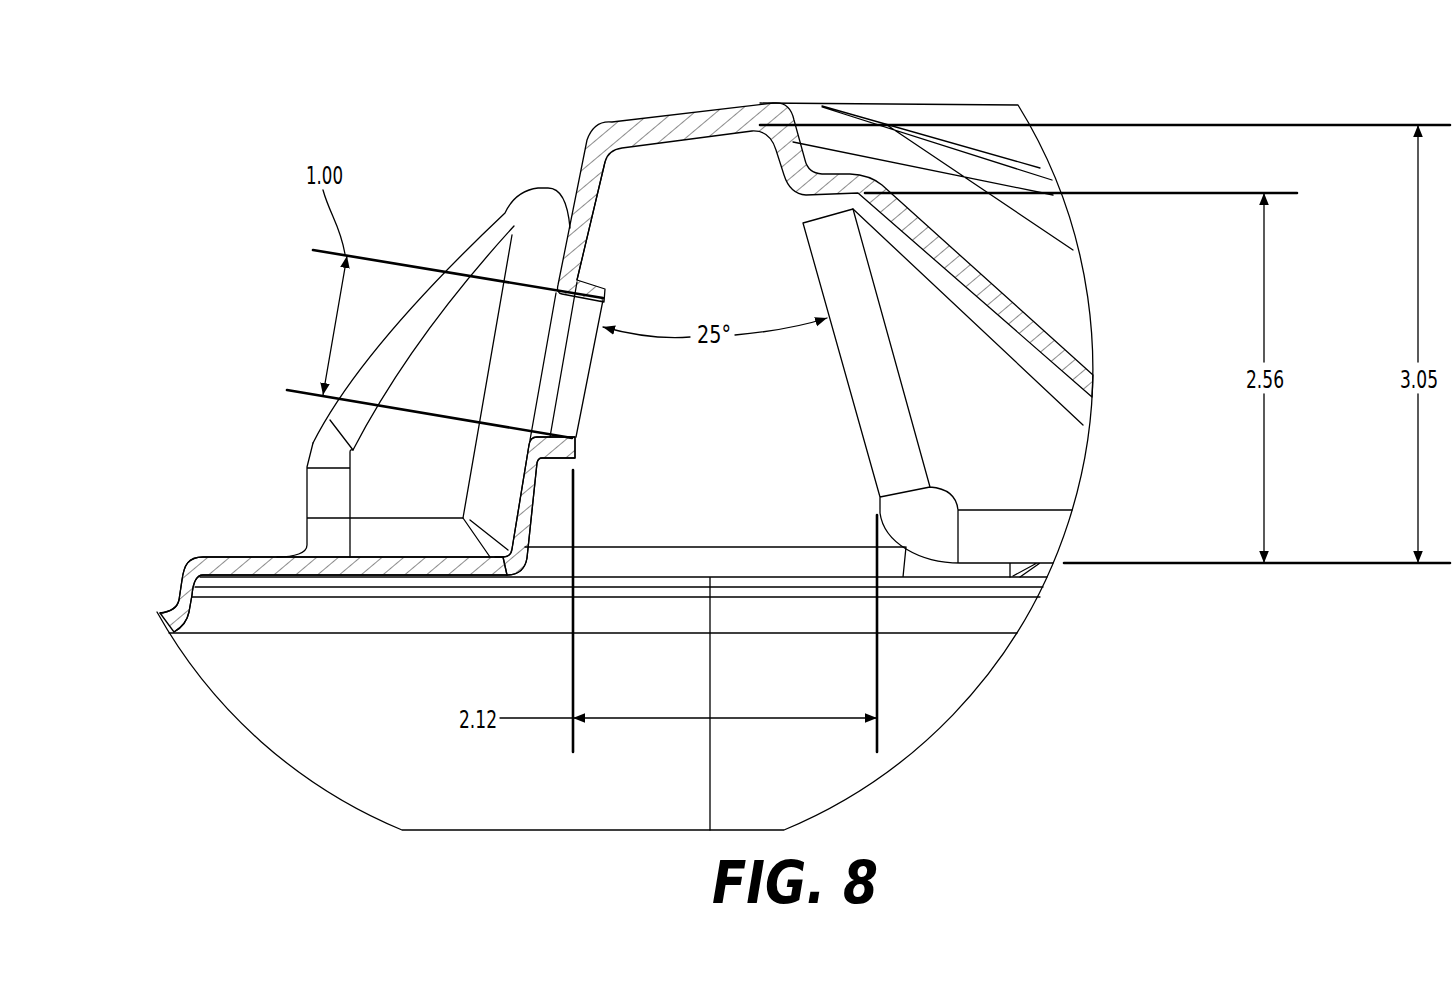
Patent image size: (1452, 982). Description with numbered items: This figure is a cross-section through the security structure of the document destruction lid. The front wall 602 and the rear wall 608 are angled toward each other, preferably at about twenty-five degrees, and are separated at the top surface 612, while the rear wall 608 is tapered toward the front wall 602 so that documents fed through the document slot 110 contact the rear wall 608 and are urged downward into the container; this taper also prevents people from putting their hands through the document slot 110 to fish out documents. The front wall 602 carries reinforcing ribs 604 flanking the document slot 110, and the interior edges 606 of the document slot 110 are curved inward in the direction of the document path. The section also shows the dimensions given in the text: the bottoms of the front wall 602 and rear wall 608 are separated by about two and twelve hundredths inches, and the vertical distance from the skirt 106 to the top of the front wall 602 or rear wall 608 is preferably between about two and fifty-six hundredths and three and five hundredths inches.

The skirt 106 is at (177, 575).
The document slot 110 is at (547, 337).
The front wall 602 is at (578, 232).
The reinforcing ribs 604 is at (323, 449).
The interior edges 606 is at (552, 470).
The rear wall 608 is at (863, 287).
The top surface 612 is at (677, 150).